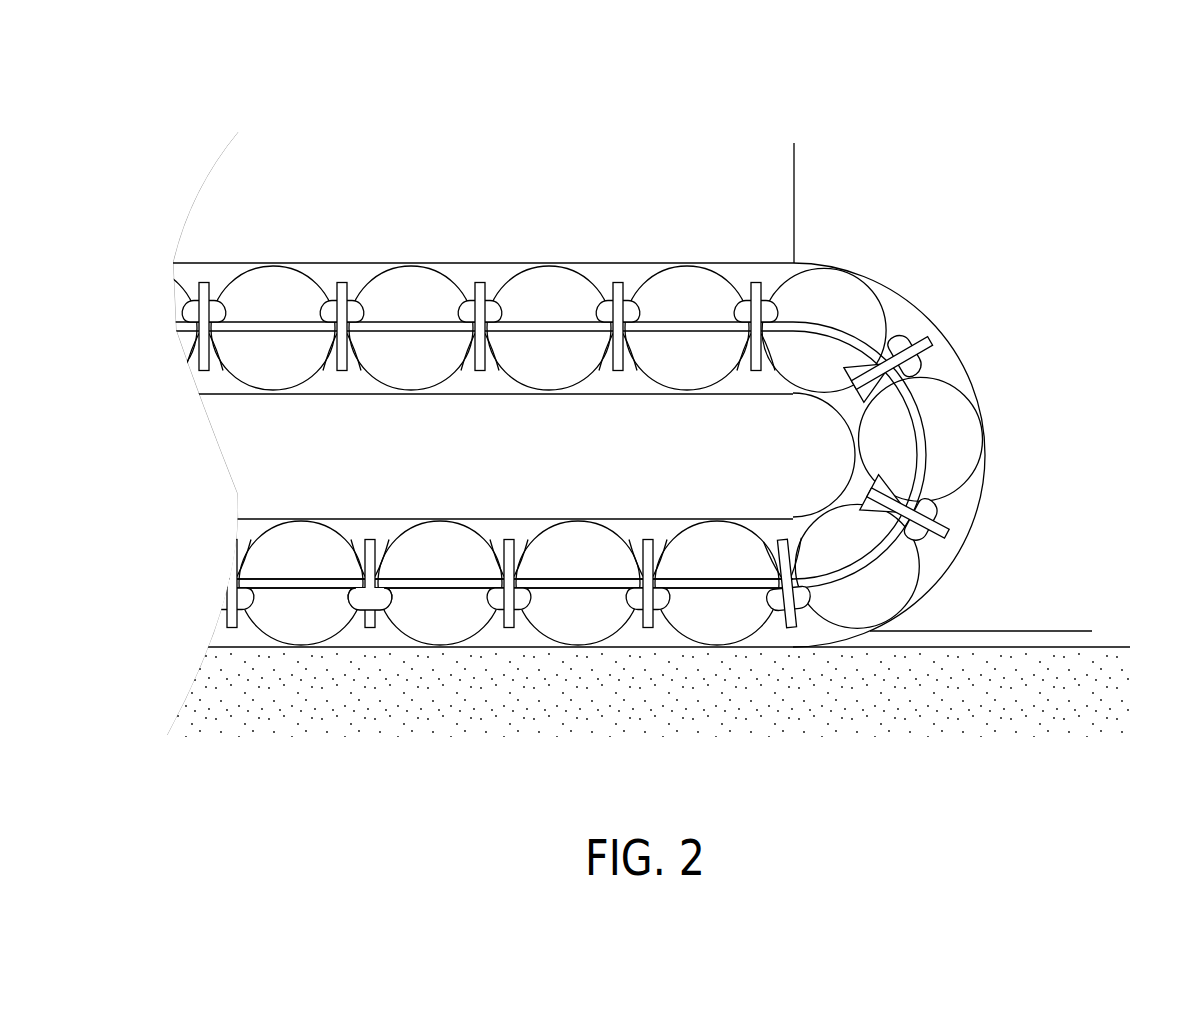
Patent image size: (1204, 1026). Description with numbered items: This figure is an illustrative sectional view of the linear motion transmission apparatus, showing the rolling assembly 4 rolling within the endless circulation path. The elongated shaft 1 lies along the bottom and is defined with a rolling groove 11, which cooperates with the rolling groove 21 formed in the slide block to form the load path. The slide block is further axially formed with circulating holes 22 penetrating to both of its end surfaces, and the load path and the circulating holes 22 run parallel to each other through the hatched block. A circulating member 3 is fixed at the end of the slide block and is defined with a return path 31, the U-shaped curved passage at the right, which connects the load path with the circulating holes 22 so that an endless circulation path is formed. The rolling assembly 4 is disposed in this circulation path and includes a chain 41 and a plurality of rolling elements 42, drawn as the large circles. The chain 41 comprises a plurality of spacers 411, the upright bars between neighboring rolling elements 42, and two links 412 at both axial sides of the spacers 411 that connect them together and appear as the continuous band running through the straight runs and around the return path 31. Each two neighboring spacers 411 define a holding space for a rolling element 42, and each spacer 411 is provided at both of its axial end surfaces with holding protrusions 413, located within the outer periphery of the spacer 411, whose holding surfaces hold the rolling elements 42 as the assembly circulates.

The elongated shaft 1 is at (665, 721).
The rolling groove 11 is at (791, 648).
The rolling groove 21 is at (678, 519).
The circulating holes 22 is at (628, 275).
The circulating member 3 is at (669, 428).
The return path 31 is at (962, 510).
The rolling assembly 4 is at (548, 437).
The chain 41 is at (852, 327).
The spacer 411 is at (343, 288).
The link 412 is at (574, 584).
The holding protrusion 413 is at (390, 607).
The rolling element 42 is at (795, 300).